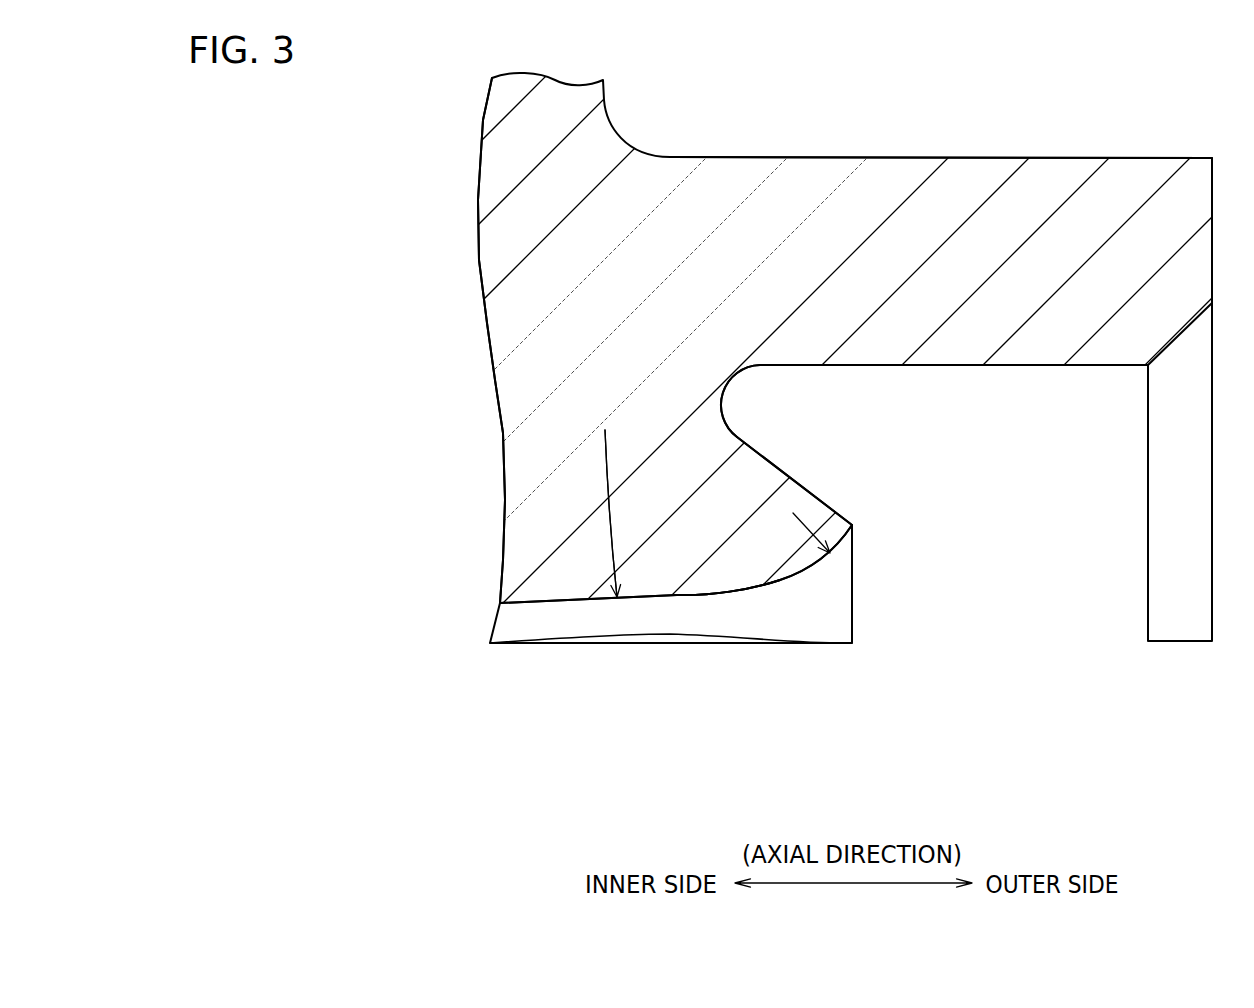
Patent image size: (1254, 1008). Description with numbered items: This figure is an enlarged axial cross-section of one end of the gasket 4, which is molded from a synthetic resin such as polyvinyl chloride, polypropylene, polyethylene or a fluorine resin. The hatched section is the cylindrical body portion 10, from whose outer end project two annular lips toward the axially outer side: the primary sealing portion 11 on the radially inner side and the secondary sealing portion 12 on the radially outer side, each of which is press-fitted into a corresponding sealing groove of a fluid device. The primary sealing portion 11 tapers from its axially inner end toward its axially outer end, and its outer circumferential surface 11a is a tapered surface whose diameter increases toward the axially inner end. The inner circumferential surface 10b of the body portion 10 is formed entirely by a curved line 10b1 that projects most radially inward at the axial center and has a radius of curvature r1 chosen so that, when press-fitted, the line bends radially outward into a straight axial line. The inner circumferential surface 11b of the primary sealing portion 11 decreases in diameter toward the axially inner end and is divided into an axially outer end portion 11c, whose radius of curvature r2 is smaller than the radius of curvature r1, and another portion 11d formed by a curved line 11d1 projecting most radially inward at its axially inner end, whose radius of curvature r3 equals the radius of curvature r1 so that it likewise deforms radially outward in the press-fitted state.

The gasket 4 is at (422, 121).
The body portion 10 is at (523, 320).
The inner circumferential surface 10b is at (545, 603).
The curved line 10b1 is at (588, 675).
The primary sealing portion 11 is at (802, 493).
The outer circumferential surface 11a is at (748, 452).
The inner circumferential surface 11b is at (707, 735).
The axially outer end portion 11c is at (815, 573).
The other portion 11d is at (750, 584).
The curved line 11d1 is at (734, 660).
The secondary sealing portion 12 is at (973, 183).
The radius of curvature r1 is at (612, 503).
The radius of curvature r2 is at (827, 503).
The radius of curvature r3 is at (639, 513).